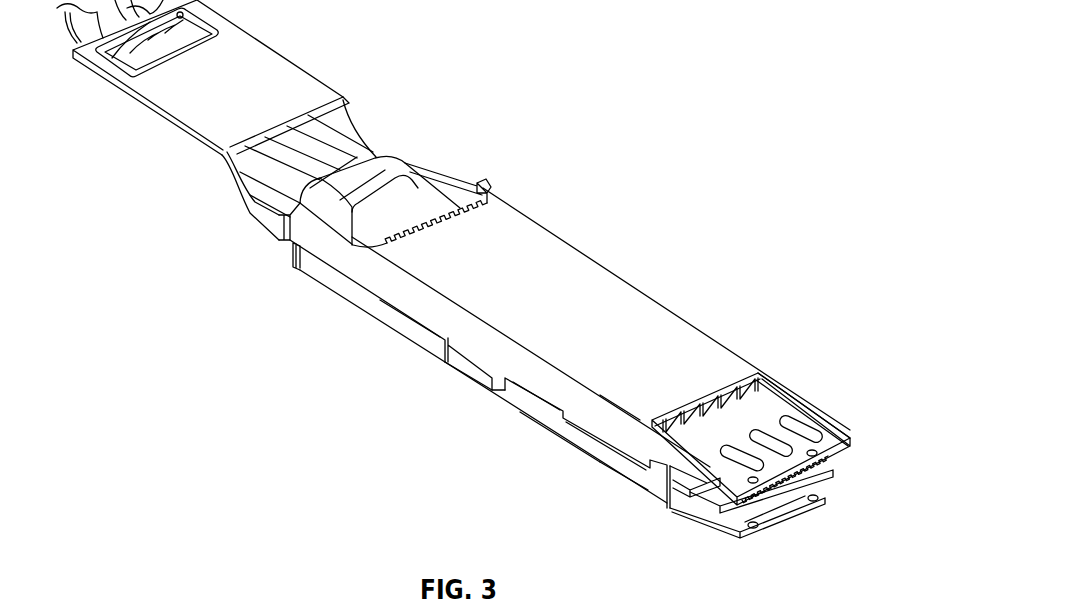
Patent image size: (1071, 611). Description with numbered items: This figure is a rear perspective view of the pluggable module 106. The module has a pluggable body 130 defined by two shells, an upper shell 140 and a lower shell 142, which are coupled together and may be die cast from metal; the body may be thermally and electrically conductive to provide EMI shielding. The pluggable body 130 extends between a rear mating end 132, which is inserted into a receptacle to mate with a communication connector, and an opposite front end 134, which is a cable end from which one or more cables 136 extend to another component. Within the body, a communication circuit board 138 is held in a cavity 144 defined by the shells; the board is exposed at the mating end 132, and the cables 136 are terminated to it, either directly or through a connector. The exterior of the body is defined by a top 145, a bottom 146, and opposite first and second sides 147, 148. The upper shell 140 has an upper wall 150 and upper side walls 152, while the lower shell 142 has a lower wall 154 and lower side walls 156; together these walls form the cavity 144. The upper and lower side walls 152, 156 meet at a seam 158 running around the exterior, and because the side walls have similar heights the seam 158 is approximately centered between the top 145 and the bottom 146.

The pluggable module 106 is at (620, 133).
The pluggable body 130 is at (520, 400).
The mating end 132 is at (782, 413).
The front end 134 is at (280, 253).
The cables 136 is at (302, 152).
The communication circuit board 138 is at (787, 501).
The upper shell 140 is at (590, 405).
The lower shell 142 is at (583, 448).
The cavity 144 is at (763, 515).
The top 145 is at (732, 365).
The bottom 146 is at (678, 508).
The first side 147 is at (793, 380).
The second side 148 is at (640, 468).
The upper wall 150 is at (742, 418).
The upper side walls 152 is at (627, 428).
The lower wall 154 is at (707, 520).
The lower side walls 156 is at (585, 447).
The seam 158 is at (407, 313).